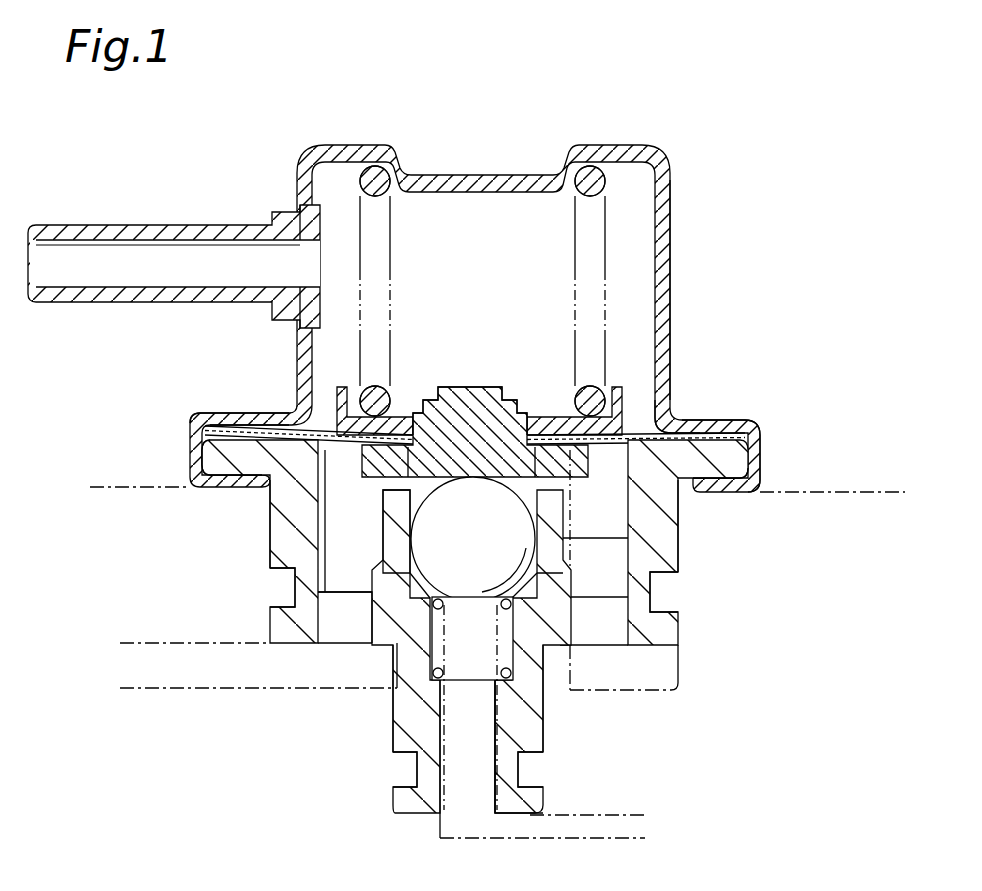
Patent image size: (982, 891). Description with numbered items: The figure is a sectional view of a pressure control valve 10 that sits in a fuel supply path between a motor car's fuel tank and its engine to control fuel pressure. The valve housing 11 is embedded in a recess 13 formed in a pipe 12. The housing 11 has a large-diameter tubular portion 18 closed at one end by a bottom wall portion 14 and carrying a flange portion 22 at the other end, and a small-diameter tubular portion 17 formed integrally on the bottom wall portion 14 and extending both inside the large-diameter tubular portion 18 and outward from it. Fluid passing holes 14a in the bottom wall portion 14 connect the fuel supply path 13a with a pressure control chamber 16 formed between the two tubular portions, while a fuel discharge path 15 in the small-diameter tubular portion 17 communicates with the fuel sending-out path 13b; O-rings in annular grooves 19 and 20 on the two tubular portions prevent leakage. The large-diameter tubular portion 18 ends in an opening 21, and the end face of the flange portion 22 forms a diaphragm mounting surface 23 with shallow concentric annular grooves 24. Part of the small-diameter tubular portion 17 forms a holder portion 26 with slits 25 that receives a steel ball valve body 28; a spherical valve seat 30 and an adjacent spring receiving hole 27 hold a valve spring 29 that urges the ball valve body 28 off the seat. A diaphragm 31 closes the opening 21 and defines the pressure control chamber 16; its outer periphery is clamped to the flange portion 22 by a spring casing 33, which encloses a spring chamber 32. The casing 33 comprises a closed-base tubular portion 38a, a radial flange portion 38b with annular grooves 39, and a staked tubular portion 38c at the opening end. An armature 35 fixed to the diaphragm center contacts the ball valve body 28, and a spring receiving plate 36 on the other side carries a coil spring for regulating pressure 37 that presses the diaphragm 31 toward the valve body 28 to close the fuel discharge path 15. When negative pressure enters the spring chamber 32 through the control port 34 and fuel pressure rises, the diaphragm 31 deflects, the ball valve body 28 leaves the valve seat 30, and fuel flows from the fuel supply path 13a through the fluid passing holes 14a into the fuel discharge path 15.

The pressure control valve 10 is at (780, 170).
The valve housing 11 is at (679, 525).
The pipe 12 is at (847, 490).
The recess 13 is at (677, 656).
The fuel supply path 13a is at (227, 657).
The fuel sending-out path 13b is at (610, 813).
The bottom wall portion 14 is at (518, 606).
The fluid passing holes 14a is at (553, 627).
The fuel discharge path 15 is at (477, 800).
The pressure control chamber 16 is at (522, 477).
The small-diameter tubular portion 17 is at (525, 737).
The large-diameter tubular portion 18 is at (270, 523).
The annular groove 19 is at (397, 763).
The annular groove 20 is at (272, 596).
The opening 21 is at (660, 412).
The flange portion 22 is at (213, 460).
The diaphragm mounting surface 23 is at (210, 420).
The annular grooves 24 is at (750, 437).
The slits 25 is at (675, 558).
The holder portion 26 is at (397, 557).
The spring receiving hole 27 is at (487, 660).
The steel ball valve body 28 is at (517, 520).
The valve spring 29 is at (555, 605).
The valve seat 30 is at (413, 562).
The diaphragm 31 is at (292, 403).
The spring chamber 32 is at (512, 291).
The spring casing 33 is at (668, 294).
The control port 34 is at (190, 225).
The armature 35 is at (475, 400).
The spring receiving plate 36 is at (613, 407).
The coil spring for regulating pressure 37 is at (577, 187).
The tubular portion 38a is at (660, 217).
The flange portion 38b is at (712, 420).
The tubular portion at opening end 38c is at (727, 492).
The annular grooves 39 is at (738, 424).